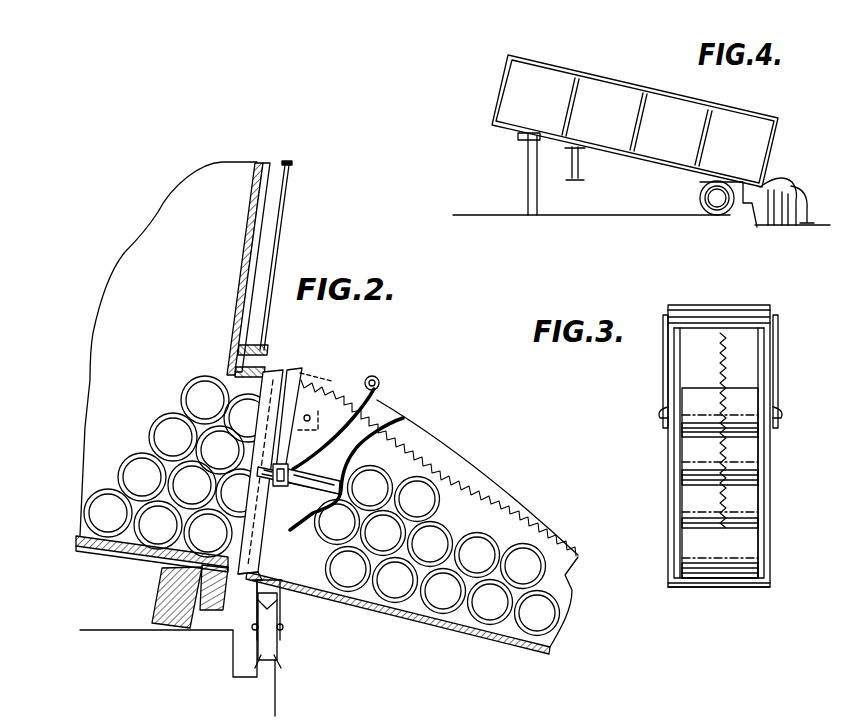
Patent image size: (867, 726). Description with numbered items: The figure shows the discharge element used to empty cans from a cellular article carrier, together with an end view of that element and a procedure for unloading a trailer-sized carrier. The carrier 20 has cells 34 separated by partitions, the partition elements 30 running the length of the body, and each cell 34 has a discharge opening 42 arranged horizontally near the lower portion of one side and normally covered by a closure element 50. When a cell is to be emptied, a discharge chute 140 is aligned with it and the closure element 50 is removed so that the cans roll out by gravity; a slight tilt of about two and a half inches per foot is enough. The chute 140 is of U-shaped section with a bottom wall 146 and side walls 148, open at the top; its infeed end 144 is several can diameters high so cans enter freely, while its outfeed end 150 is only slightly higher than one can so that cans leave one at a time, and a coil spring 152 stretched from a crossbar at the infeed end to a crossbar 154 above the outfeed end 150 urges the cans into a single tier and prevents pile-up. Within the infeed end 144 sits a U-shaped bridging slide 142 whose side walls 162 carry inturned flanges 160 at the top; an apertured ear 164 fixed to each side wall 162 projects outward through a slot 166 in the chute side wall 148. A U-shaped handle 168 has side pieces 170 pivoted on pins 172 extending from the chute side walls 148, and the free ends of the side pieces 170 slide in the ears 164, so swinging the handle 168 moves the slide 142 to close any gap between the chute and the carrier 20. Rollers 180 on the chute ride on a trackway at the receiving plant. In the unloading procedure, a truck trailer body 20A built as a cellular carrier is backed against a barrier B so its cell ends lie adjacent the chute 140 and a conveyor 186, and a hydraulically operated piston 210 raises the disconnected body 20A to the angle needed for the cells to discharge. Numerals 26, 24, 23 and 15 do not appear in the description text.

In FIG. 2, the partition element 30 is at (163, 225).
In FIG. 2, the cell 34 is at (128, 297).
In FIG. 2, the side wall 26 is at (247, 224).
In FIG. 2, the carrier 20 is at (254, 242).
In FIG. 2, the closure element 50 is at (286, 205).
In FIG. 2, the discharge opening 42 is at (222, 374).
In FIG. 2, the bridging slide 142 is at (275, 379).
In FIG. 2, the infeed end 144 is at (279, 402).
In FIG. 2, the pin 172 is at (310, 414).
In FIG. 2, the handle 168 is at (357, 378).
In FIG. 3, the handle 168 is at (668, 310).
In FIG. 2, the side piece 170 is at (356, 403).
In FIG. 3, the side piece 170 is at (665, 378).
In FIG. 2, the discharge chute 140 is at (384, 414).
In FIG. 4, the discharge chute 140 is at (774, 182).
In FIG. 3, the discharge chute 140 is at (745, 451).
In FIG. 2, the slot 166 is at (410, 440).
In FIG. 2, the apertured ear 164 is at (300, 467).
In FIG. 3, the apertured ear 164 is at (661, 414).
In FIG. 2, the coil spring 152 is at (462, 487).
In FIG. 2, the side wall 162 is at (270, 563).
In FIG. 3, the side wall 162 is at (765, 357).
In FIG. 2, the roller 180 is at (278, 641).
In FIG. 2, the bottom wall 146 is at (421, 614).
In FIG. 3, the bottom wall 146 is at (771, 587).
In FIG. 2, the floor plate 24 is at (103, 552).
In FIG. 2, the support block 23 is at (160, 597).
In FIG. 4, the truck trailer body 20A is at (617, 60).
In FIG. 4, the piston 210 is at (530, 173).
In FIG. 4, the barrier B is at (746, 182).
In FIG. 4, the conveyor 186 is at (808, 205).
In FIG. 3, the inturned flange 160 is at (693, 330).
In FIG. 3, the barrel 15 is at (722, 410).
In FIG. 3, the side wall 148 is at (673, 474).
In FIG. 3, the crossbar 154 is at (724, 528).
In FIG. 3, the outfeed end 150 is at (765, 567).